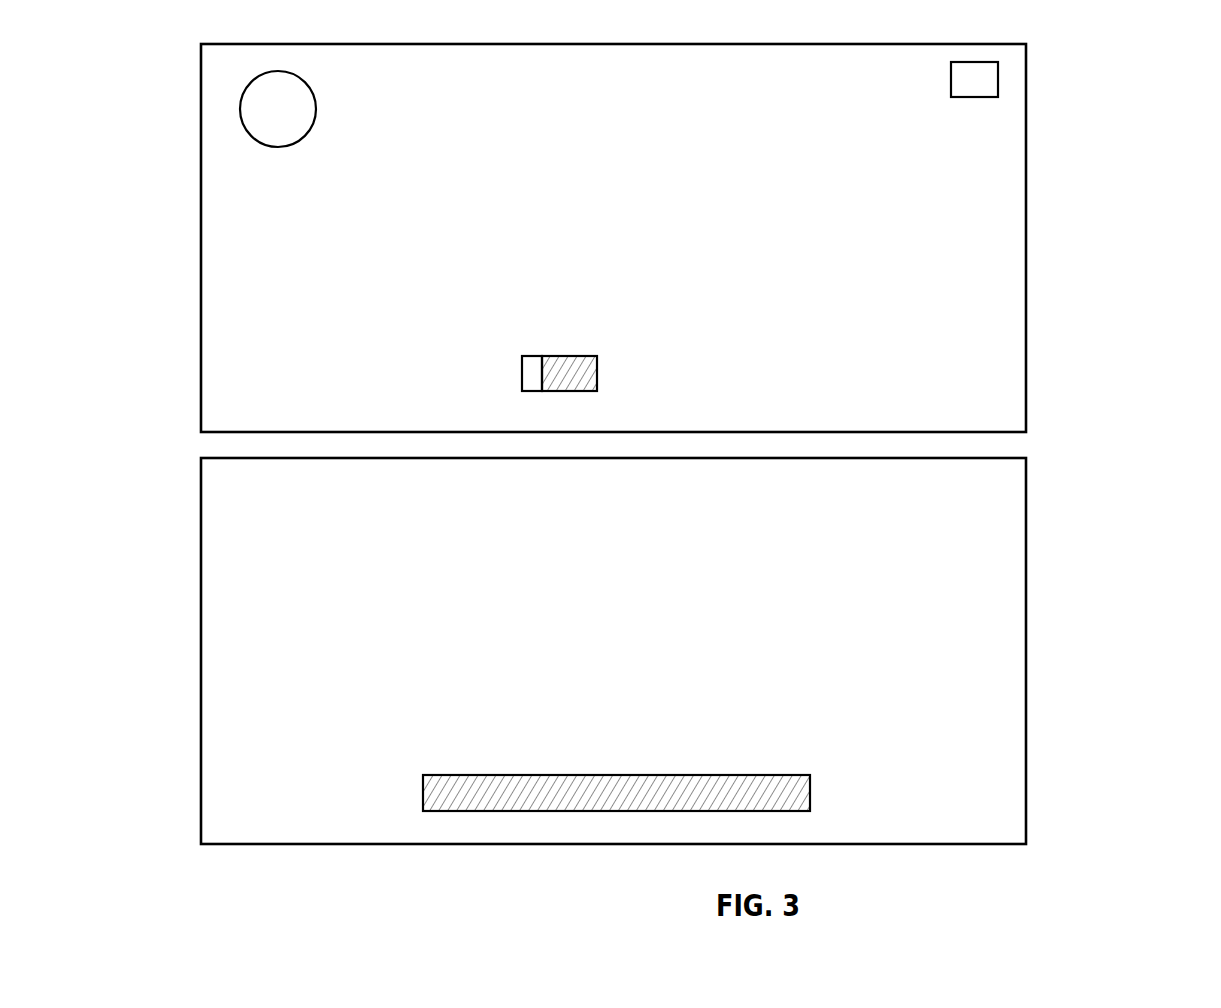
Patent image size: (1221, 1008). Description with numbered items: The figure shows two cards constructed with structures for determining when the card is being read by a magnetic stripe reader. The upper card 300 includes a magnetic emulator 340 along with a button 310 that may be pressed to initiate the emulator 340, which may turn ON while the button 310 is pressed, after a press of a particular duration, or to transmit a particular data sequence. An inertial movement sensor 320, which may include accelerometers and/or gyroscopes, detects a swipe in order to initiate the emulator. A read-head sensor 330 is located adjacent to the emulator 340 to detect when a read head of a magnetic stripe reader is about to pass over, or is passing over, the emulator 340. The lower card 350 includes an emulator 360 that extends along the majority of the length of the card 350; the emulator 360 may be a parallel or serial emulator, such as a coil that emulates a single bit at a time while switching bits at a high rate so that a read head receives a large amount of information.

The card 300 is at (1155, 509).
The button 310 is at (281, 70).
The inertial movement sensor 320 is at (951, 62).
The read-head sensor 330 is at (522, 356).
The magnetic emulator 340 is at (596, 356).
The card 350 is at (200, 611).
The emulator 360 is at (613, 775).